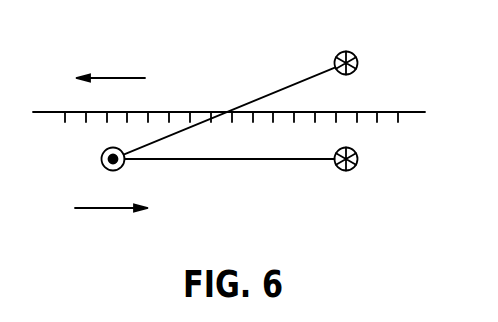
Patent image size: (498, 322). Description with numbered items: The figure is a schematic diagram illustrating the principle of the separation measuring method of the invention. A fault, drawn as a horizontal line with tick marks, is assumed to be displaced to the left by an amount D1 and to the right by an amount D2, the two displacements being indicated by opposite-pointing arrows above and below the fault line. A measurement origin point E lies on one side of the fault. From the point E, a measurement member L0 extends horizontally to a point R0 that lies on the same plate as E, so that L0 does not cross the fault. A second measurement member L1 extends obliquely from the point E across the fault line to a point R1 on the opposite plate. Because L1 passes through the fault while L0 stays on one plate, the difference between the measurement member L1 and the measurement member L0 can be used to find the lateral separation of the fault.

The displacement to the left D1 is at (110, 65).
The displacement to the right D2 is at (111, 223).
The measurement origin point E is at (100, 160).
The measurement member on the same plate L0 is at (230, 148).
The measurement member extending through the fault L1 is at (230, 110).
The end point of measurement member L0 R0 is at (349, 174).
The end point of measurement member L1 R1 is at (346, 49).